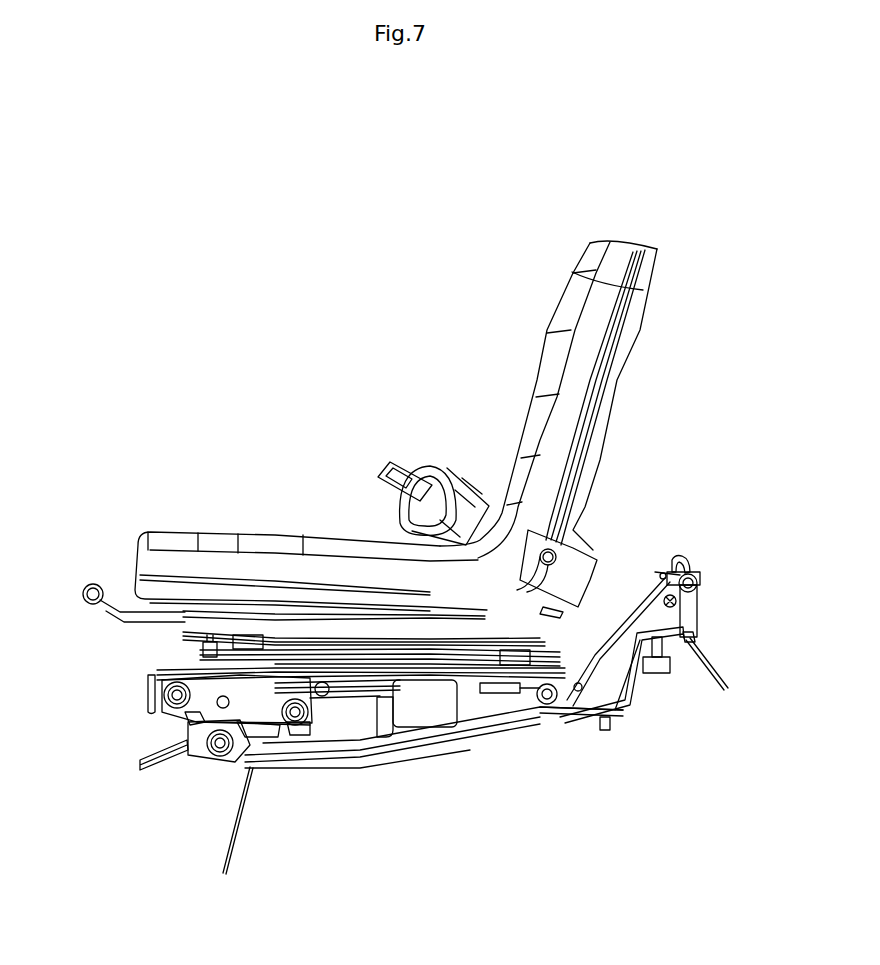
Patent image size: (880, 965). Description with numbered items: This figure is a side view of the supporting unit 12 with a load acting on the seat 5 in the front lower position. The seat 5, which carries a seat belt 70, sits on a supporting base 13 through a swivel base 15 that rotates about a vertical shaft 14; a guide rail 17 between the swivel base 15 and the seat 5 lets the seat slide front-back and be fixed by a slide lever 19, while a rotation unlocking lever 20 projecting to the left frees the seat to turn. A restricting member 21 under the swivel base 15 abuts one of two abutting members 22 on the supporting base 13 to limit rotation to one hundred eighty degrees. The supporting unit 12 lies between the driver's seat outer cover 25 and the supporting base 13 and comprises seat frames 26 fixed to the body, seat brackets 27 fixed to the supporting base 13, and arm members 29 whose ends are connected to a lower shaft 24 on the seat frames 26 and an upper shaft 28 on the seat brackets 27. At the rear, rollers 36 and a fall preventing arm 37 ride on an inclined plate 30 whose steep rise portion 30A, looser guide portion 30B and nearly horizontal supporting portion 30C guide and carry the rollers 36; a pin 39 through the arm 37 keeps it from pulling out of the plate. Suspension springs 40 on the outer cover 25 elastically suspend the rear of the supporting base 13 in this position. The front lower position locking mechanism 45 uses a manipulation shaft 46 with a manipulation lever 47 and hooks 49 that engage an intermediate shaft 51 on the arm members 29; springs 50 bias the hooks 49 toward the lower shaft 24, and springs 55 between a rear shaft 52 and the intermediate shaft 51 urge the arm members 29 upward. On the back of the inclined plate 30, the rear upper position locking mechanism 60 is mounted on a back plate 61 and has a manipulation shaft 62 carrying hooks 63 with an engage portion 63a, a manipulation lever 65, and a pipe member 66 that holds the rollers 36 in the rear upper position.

The seat 5 is at (621, 245).
The seat belt 70 is at (443, 467).
The vertical shaft 14 is at (360, 633).
The guide rail 17 is at (473, 633).
The rotation unlocking lever 20 is at (237, 643).
The swivel base 15 is at (545, 650).
The supporting base 13 is at (542, 677).
The slide lever 19 is at (92, 583).
The supporting unit 12 is at (131, 696).
The upper shaft 28 is at (172, 704).
The arm members 29 is at (205, 716).
The manipulation shaft 46 is at (223, 708).
The manipulation lever 47 is at (140, 765).
The front lower position locking mechanism 45 is at (158, 771).
The intermediate shaft 51 is at (233, 752).
The hooks 49 is at (212, 752).
The driver's seat outer cover 25 is at (228, 860).
The springs 50 is at (262, 732).
The springs 55 is at (305, 705).
The lower shaft 24 is at (297, 718).
The rear shaft 52 is at (322, 682).
The restricting member 21 is at (377, 690).
The seat frames 26 is at (323, 732).
The abutting members 22 is at (380, 690).
The seat brackets 27 is at (480, 690).
The suspension springs 40 is at (415, 705).
The arm 37 is at (517, 690).
The rollers 36 is at (545, 704).
The rise portion 30A is at (557, 693).
The pin 39 is at (577, 692).
The inclined plate 30 is at (662, 580).
The guide portion 30B is at (600, 630).
The supporting portion 30C is at (668, 568).
The pipe member 66 is at (663, 573).
The rear upper position locking mechanism 60 is at (707, 587).
The hooks 63 is at (678, 560).
The engage portion 63a is at (695, 597).
The manipulation shaft 62 is at (692, 618).
The manipulation lever 65 is at (725, 686).
The back plate 61 is at (605, 632).